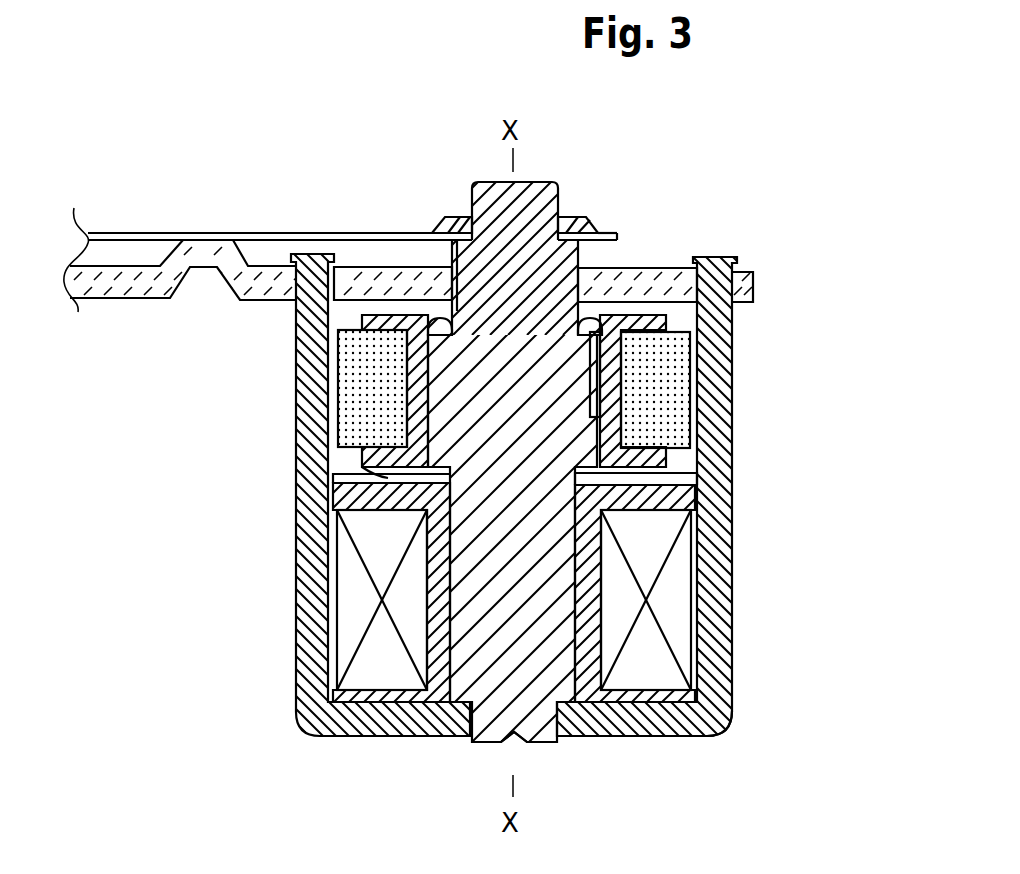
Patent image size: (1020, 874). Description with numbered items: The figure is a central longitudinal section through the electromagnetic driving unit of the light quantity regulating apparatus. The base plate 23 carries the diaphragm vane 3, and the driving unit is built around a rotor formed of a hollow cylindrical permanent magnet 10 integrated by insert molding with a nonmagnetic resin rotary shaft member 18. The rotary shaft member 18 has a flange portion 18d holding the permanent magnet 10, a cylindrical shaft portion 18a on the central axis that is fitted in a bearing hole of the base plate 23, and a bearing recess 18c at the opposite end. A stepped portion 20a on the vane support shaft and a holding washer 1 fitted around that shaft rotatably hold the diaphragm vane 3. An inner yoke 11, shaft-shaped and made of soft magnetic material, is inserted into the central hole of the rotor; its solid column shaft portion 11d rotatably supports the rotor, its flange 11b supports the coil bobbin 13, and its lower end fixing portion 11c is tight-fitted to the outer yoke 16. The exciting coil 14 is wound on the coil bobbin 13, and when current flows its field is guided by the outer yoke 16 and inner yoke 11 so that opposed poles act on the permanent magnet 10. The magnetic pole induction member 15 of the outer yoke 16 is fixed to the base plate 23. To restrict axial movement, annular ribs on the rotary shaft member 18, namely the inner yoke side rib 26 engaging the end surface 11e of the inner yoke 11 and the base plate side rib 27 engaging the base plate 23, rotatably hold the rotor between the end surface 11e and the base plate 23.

The holding washer 1 is at (578, 218).
The diaphragm vane 3 is at (176, 237).
The permanent magnet 10 is at (355, 385).
The inner yoke 11 is at (540, 722).
The flange 11b is at (335, 490).
The fixing portion (lower end portion) 11c is at (466, 746).
The shaft portion 11d is at (700, 482).
The end surface 11e is at (480, 338).
The coil bobbin 13 is at (427, 732).
The exciting coil 14 is at (680, 570).
The magnetic pole induction member 15 is at (722, 355).
The outer yoke 16 is at (727, 708).
The rotary shaft member 18 is at (707, 465).
The shaft portion 18a is at (560, 272).
The bearing recess 18c is at (428, 434).
The flange portion 18d is at (388, 478).
The stepped portion 20a is at (598, 238).
The base plate 23 is at (152, 300).
The inner yoke side rib 26 is at (605, 343).
The base plate side rib 27 is at (403, 268).